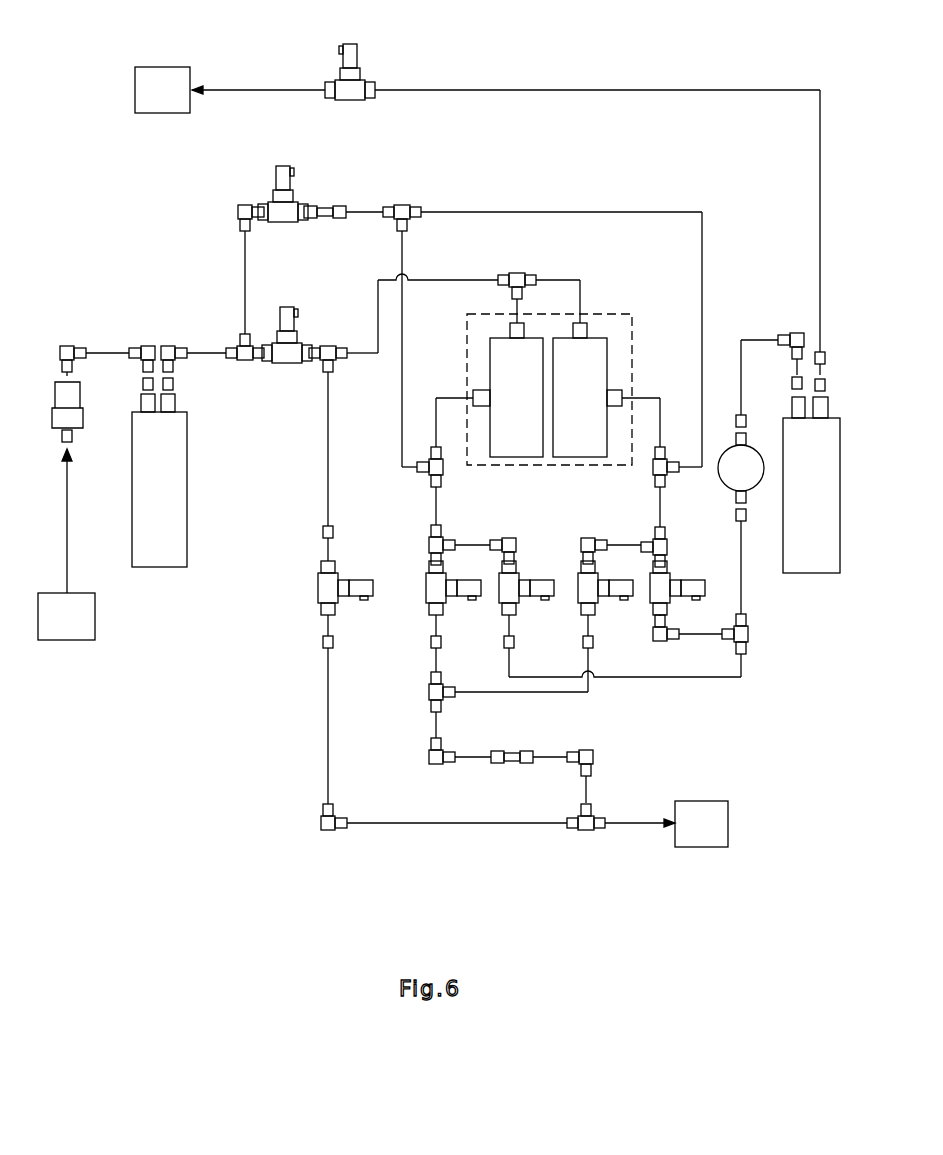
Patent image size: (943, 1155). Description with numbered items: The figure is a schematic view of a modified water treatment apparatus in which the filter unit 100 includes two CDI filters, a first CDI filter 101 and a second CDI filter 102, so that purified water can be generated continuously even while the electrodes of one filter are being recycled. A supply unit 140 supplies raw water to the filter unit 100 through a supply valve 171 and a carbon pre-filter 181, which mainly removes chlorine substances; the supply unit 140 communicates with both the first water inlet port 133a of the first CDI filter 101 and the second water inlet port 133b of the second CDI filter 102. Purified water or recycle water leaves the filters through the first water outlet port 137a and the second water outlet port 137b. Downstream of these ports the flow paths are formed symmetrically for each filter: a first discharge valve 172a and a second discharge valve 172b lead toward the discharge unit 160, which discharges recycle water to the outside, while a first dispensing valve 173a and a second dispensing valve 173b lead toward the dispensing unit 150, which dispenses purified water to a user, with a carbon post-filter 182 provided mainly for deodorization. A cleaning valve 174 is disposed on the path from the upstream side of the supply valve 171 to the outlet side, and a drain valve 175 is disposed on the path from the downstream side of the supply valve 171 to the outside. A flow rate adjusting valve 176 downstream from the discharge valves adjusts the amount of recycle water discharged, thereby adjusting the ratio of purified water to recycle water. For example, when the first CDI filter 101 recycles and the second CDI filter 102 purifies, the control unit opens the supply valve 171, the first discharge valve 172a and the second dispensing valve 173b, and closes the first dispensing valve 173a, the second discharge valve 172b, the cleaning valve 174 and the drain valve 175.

The filter unit 100 is at (630, 313).
The first CDI filter 101 is at (517, 458).
The second CDI filter 102 is at (579, 458).
The first water inlet port 133a is at (512, 322).
The second water inlet port 133b is at (580, 320).
The first water outlet port 137a is at (472, 397).
The second water outlet port 137b is at (623, 397).
The supply unit 140 is at (65, 641).
The dispensing unit 150 is at (160, 66).
The discharge unit 160 is at (699, 848).
The supply valve 171 is at (285, 306).
The first discharge valve 172a is at (427, 601).
The second discharge valve 172b is at (599, 601).
The first dispensing valve 173a is at (520, 601).
The second dispensing valve 173b is at (693, 578).
The cleaning valve 174 is at (287, 165).
The drain valve 175 is at (317, 589).
The flow rate adjusting valve 176 is at (515, 750).
The carbon pre-filter 181 is at (157, 568).
The carbon post-filter 182 is at (811, 574).